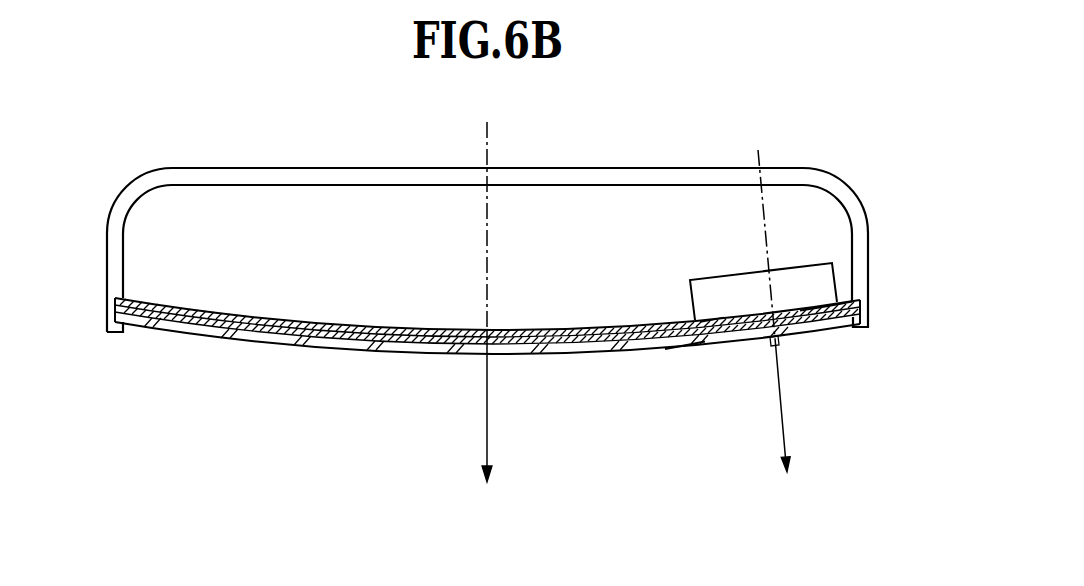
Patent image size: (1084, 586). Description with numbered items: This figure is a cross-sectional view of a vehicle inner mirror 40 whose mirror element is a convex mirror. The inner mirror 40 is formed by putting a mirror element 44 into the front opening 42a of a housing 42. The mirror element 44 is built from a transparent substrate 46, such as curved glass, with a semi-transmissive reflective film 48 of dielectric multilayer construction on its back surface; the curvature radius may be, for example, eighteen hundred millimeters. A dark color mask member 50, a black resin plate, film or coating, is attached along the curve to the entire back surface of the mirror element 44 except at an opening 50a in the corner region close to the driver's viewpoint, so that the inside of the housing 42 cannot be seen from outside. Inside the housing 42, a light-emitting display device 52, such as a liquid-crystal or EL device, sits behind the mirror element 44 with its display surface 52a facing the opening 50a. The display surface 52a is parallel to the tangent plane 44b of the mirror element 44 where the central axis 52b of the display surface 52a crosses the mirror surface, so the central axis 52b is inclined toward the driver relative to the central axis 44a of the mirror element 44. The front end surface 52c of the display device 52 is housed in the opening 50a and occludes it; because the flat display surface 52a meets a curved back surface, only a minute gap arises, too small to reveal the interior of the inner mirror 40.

The inner mirror 40 is at (815, 124).
The housing 42 is at (632, 168).
The front opening 42a is at (848, 330).
The mirror element 44 is at (377, 365).
The central axis of the mirror element 44a is at (489, 140).
The tangent plane 44b is at (684, 348).
The transparent substrate 46 is at (316, 343).
The semi-transmissive reflective film 48 is at (240, 323).
The dark color mask member 50 is at (176, 312).
The opening 50a is at (821, 310).
The light-emitting display device 52 is at (826, 277).
The display surface 52a is at (749, 322).
The central axis of the display surface 52b is at (809, 322).
The front end surface 52c is at (711, 333).